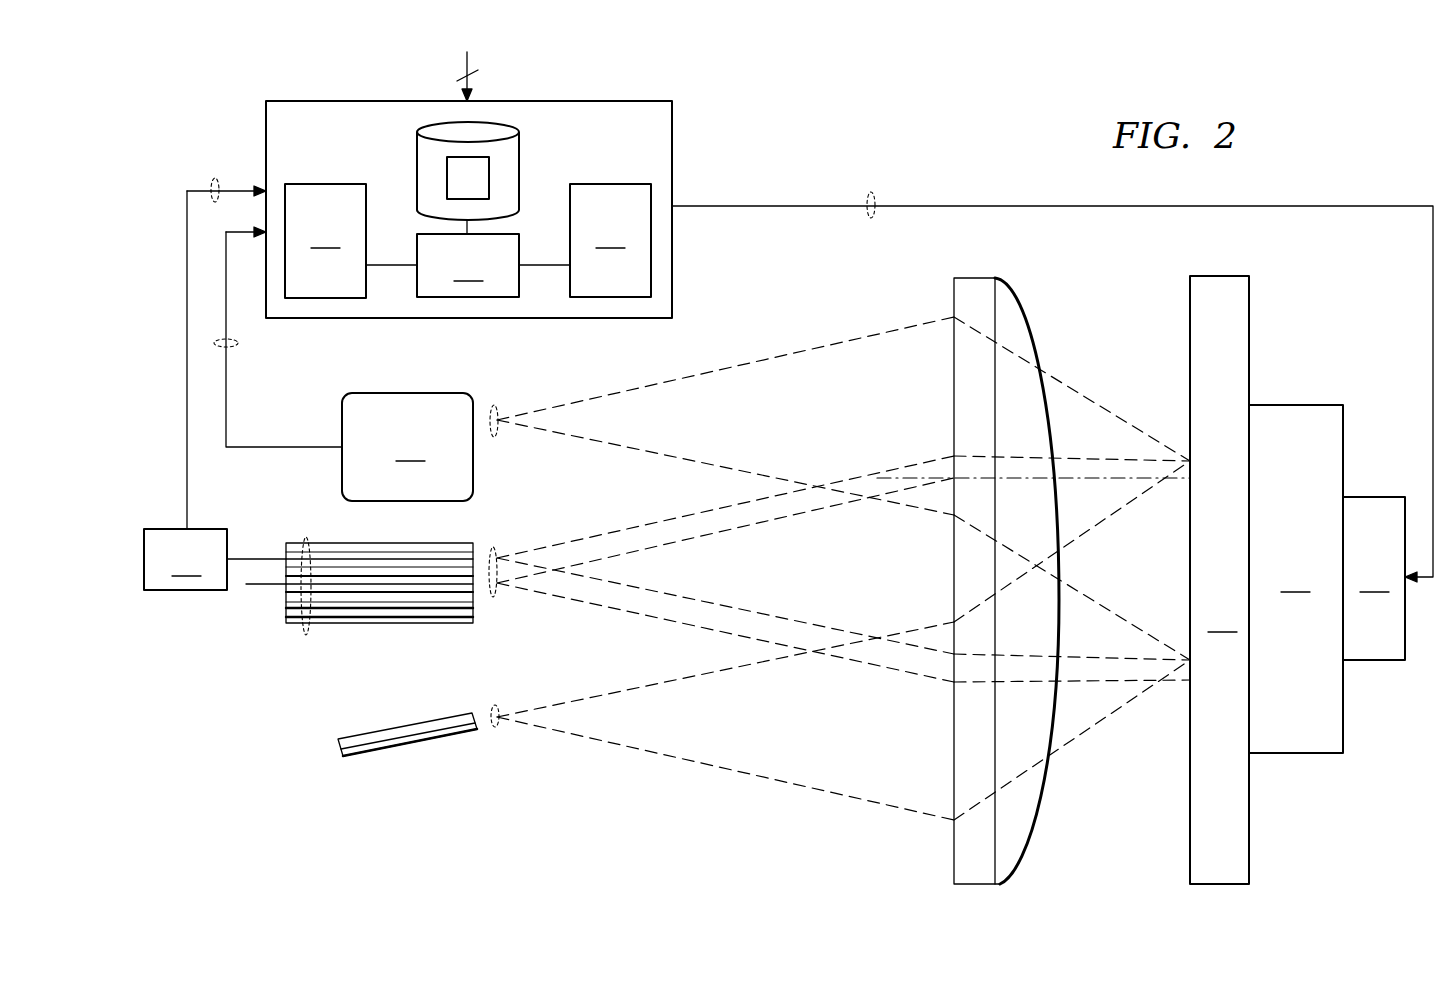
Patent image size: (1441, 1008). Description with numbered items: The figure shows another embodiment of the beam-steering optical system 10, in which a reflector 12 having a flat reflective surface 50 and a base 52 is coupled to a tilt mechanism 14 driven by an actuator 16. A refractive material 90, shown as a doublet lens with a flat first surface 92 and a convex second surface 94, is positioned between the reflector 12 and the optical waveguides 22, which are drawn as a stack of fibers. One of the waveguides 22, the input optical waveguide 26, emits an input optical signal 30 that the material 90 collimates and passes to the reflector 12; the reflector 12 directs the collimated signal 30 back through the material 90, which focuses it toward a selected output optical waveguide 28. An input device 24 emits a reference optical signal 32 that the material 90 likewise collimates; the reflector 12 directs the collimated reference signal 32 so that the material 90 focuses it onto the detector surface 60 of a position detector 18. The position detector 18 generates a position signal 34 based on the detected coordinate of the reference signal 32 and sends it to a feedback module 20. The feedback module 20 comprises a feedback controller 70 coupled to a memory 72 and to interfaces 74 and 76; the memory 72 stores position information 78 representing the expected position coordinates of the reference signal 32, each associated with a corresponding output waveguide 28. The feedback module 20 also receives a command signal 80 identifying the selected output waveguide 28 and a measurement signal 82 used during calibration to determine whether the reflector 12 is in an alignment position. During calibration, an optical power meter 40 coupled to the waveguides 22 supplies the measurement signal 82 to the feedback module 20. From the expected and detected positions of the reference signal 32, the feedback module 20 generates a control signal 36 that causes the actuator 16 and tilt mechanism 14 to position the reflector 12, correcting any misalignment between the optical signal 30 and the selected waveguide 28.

The optical system 10 is at (1025, 143).
The reflector 12 is at (1219, 580).
The tilt mechanism 14 is at (1296, 579).
The actuator 16 is at (1374, 578).
The position detector 18 is at (407, 447).
The feedback module 20 is at (550, 100).
The optical waveguides 22 is at (307, 537).
The input device 24 is at (385, 749).
The input optical waveguide 26 is at (267, 588).
The output optical waveguide 28 is at (258, 557).
The input optical signal 30 is at (493, 597).
The reference optical signal 32 is at (493, 407).
The position signal 34 is at (240, 343).
The control signal 36 is at (872, 222).
The optical power meter 40 is at (185, 559).
The flat reflective surface 50 is at (1271, 580).
The base 52 is at (1296, 557).
The detector surface 60 is at (475, 453).
The feedback controller 70 is at (468, 265).
The memory 72 is at (415, 157).
The interface 74 is at (325, 241).
The interface 76 is at (610, 240).
The position information 78 is at (490, 178).
The command signal 80 is at (463, 63).
The measurement signal 82 is at (215, 177).
The refractive material 90 is at (980, 551).
The first surface 92 is at (953, 845).
The second surface 94 is at (1013, 289).